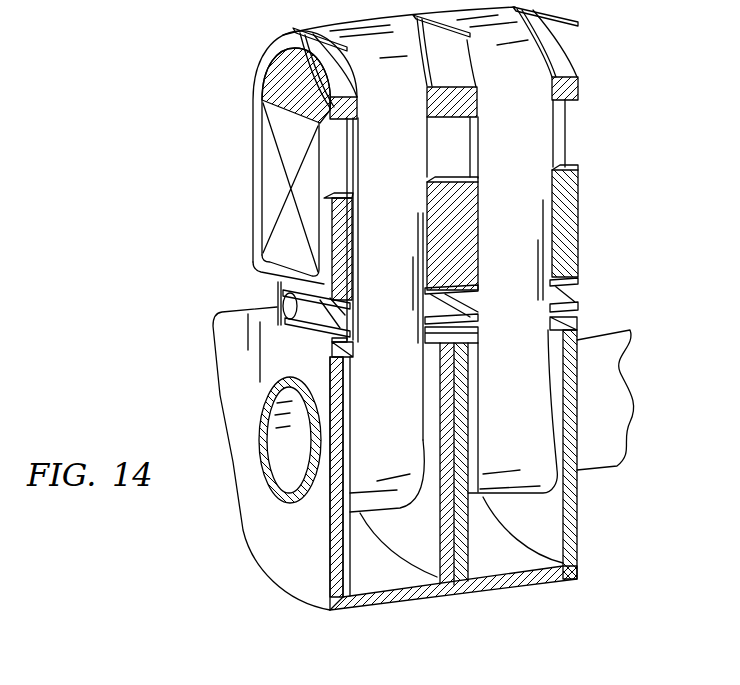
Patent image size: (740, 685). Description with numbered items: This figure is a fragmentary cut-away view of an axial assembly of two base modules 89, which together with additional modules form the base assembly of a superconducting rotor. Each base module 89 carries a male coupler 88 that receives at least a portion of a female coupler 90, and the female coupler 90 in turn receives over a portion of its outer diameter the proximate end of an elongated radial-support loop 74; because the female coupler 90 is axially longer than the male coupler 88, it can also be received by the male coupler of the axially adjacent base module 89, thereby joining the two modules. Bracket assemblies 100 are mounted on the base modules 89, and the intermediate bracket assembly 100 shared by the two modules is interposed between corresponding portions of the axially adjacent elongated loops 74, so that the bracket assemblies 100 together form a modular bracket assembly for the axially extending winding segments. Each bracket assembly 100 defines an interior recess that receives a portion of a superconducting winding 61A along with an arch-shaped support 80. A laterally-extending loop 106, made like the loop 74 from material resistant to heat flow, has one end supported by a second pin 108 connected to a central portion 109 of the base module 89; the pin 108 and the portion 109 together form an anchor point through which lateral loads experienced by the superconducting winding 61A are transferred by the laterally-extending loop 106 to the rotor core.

The loop 74 is at (400, 162).
The arch-shaped support 80 is at (287, 72).
The male coupler 88 is at (600, 352).
The base module 89 is at (397, 600).
The female coupler 90 is at (543, 470).
The bracket assembly 100 is at (253, 133).
The superconducting winding 61A is at (277, 183).
The laterally-extending loop 106 is at (310, 327).
The second pin 108 is at (280, 305).
The central portion 109 is at (313, 310).